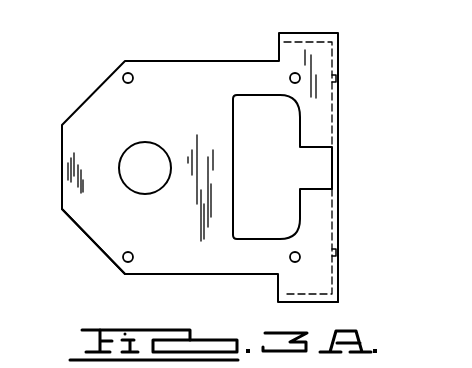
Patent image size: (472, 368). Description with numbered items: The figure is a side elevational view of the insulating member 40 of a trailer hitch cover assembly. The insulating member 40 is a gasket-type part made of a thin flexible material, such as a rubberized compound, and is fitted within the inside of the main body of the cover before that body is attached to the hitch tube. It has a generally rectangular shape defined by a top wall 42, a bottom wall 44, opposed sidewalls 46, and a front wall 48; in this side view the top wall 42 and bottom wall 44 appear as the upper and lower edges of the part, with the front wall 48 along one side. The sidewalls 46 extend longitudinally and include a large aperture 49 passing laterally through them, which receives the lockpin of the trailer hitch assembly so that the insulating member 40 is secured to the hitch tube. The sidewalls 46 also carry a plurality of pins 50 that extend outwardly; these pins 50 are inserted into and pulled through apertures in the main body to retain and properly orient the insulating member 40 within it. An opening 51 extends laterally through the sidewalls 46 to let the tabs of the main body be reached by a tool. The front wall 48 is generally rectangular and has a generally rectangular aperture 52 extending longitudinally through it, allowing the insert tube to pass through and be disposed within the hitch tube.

The insulating member 40 is at (340, 53).
The top wall 42 is at (308, 33).
The bottom wall 44 is at (289, 306).
The sidewalls 46 is at (168, 249).
The front wall 48 is at (338, 204).
The aperture 49 is at (150, 148).
The pins 50 is at (128, 73).
The opening 51 is at (296, 124).
The aperture 52 is at (341, 246).